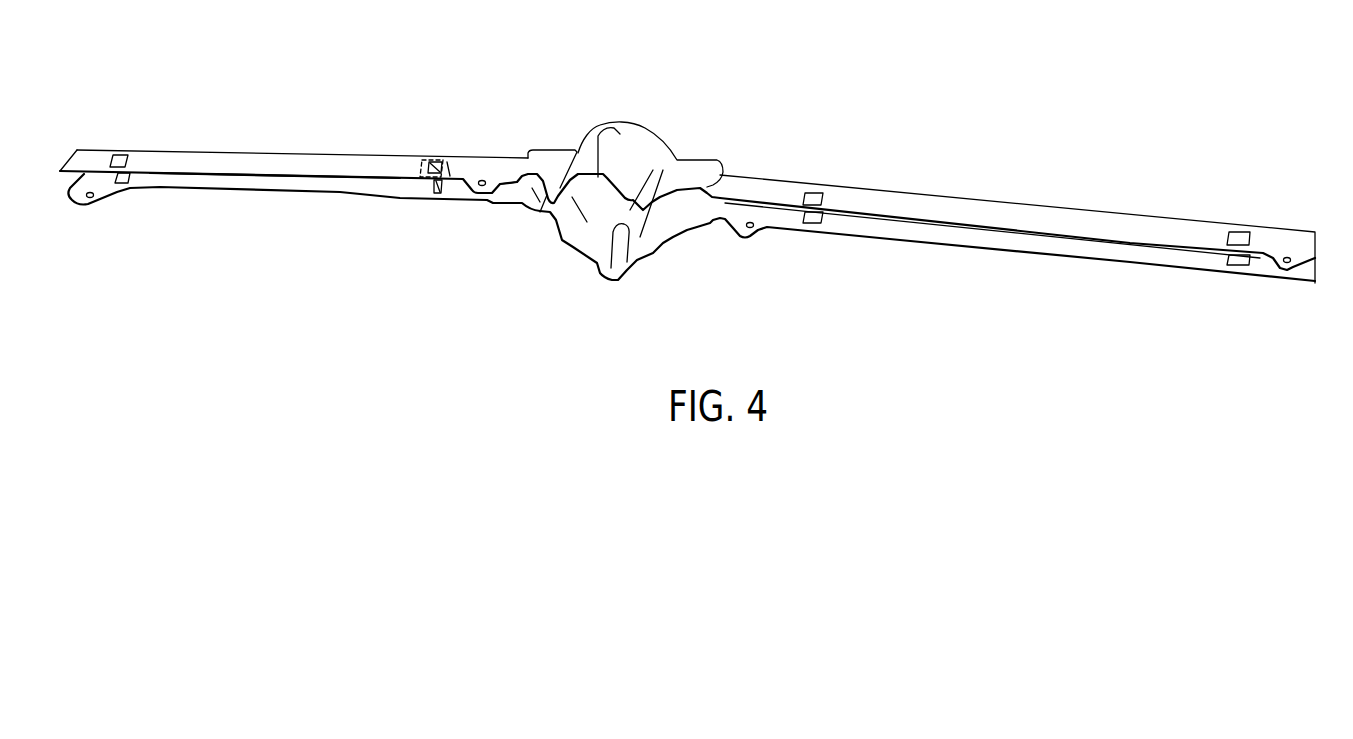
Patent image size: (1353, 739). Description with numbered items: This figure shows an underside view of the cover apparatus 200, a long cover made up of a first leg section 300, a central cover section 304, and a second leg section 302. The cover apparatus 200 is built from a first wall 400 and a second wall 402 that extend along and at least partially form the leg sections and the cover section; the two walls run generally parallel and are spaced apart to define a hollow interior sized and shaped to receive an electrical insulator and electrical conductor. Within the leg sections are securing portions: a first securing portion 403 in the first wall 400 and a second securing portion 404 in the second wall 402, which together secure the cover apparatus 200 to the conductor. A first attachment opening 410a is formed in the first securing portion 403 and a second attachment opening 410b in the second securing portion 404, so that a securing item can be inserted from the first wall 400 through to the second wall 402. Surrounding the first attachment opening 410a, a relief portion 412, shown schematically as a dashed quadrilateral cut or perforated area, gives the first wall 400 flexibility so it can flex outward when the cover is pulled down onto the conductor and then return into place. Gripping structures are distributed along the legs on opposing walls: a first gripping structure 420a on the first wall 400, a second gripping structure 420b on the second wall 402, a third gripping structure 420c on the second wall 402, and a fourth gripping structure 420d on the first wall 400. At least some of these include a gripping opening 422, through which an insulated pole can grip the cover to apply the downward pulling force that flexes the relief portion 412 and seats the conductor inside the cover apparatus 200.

The cover apparatus 200 is at (326, 79).
The first leg section 300 is at (378, 154).
The second leg section 302 is at (997, 192).
The cover section 304 is at (645, 124).
The first wall 400 is at (281, 177).
The second wall 402 is at (337, 192).
The first securing portion 403 is at (453, 160).
The second securing portion 404 is at (436, 192).
The first attachment opening 410a is at (438, 164).
The second attachment opening 410b is at (446, 196).
The relief portion 412 is at (448, 158).
The first gripping structure 420a is at (489, 196).
The second gripping structure 420b is at (752, 240).
The third gripping structure 420c is at (80, 207).
The fourth gripping structure 420d is at (1290, 272).
The gripping opening 422 is at (494, 178).